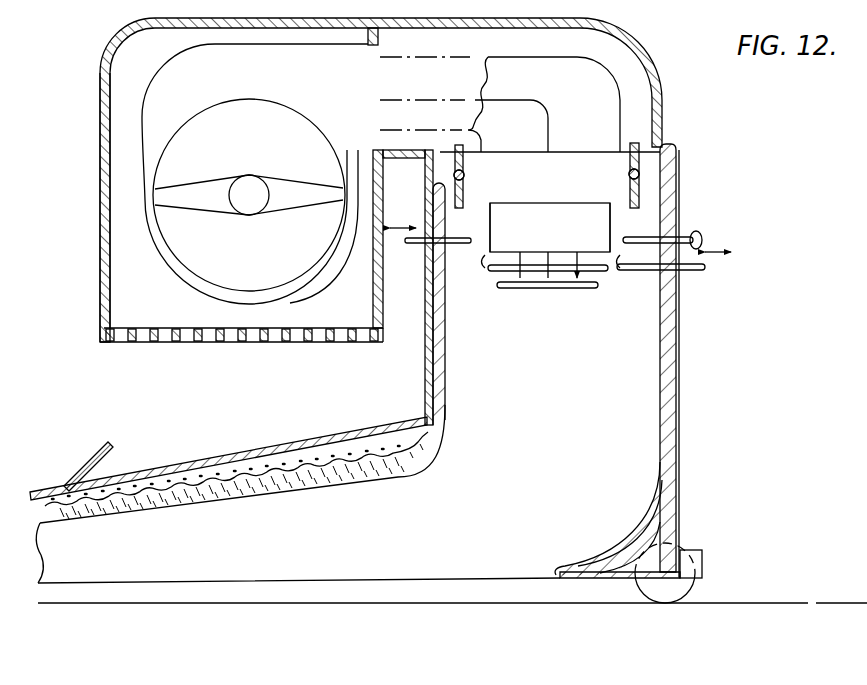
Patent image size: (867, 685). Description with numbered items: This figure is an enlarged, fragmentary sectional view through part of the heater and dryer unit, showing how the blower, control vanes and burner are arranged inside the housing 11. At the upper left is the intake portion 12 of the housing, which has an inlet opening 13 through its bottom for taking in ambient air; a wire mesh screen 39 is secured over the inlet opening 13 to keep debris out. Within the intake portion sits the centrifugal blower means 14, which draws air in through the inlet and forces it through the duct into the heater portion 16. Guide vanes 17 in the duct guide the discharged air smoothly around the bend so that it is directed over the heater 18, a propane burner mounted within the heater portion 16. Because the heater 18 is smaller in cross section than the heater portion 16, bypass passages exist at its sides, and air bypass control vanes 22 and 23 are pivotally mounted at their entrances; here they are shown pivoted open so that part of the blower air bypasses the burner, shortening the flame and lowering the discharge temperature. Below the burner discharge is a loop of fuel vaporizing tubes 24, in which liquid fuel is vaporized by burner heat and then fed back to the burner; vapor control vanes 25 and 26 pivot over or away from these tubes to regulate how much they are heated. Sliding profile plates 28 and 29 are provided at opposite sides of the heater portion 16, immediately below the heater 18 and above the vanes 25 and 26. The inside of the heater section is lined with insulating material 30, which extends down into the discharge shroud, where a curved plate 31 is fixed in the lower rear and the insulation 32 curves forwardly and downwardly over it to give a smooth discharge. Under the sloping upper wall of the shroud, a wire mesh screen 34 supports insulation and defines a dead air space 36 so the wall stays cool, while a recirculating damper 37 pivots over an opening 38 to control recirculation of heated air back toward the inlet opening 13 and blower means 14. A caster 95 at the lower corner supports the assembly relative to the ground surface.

The housing 11 is at (106, 51).
The intake portion 12 is at (100, 162).
The inlet opening 13 is at (109, 345).
The blower means 14 is at (284, 107).
The heater portion 16 is at (673, 233).
The guide vanes 17 is at (503, 100).
The heater 18 is at (550, 203).
The air bypass control vane 22 is at (465, 190).
The air bypass control vane 23 is at (640, 173).
The fuel vaporizing tubes 24 is at (566, 282).
The vapor control vane 25 is at (471, 236).
The vapor control vane 26 is at (626, 236).
The sliding profile plate 28 is at (462, 250).
The sliding profile plate 29 is at (648, 238).
The insulating material 30 is at (447, 382).
The curved plate 31 is at (662, 534).
The insulation 32 is at (612, 545).
The wire mesh screen 34 is at (378, 452).
The dead air space 36 is at (325, 450).
The recirculating damper 37 is at (93, 460).
The opening 38 is at (118, 479).
The wire mesh screen 39 is at (212, 343).
The caster 95 is at (684, 595).